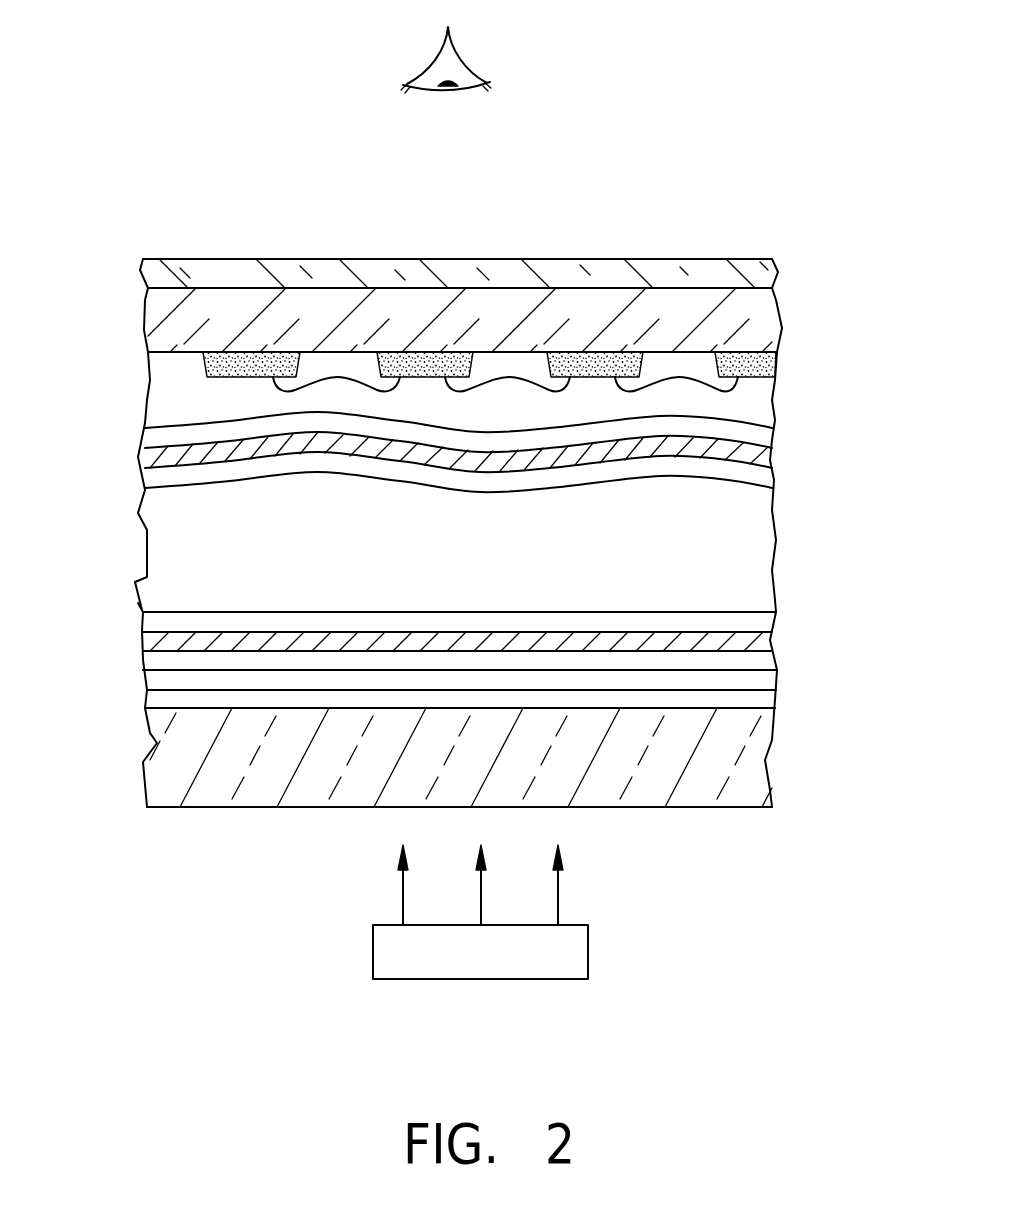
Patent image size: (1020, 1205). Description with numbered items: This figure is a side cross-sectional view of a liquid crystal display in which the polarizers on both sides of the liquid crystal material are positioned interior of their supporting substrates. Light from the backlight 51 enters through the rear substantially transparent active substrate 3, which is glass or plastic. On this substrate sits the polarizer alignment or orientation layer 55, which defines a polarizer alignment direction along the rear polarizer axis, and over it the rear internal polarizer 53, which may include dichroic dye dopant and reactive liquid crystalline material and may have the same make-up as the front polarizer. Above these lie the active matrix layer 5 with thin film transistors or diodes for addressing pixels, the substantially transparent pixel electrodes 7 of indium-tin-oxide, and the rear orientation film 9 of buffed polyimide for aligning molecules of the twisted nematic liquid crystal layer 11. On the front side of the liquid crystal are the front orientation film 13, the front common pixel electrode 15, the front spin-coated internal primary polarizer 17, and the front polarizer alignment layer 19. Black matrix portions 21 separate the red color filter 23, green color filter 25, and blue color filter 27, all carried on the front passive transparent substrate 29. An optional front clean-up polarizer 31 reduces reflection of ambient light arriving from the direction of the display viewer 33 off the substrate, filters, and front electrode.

The rear active substrate 3 is at (715, 763).
The active matrix layer 5 is at (720, 698).
The pixel electrodes 7 is at (750, 643).
The rear orientation film 9 is at (723, 622).
The liquid crystal layer 11 is at (728, 513).
The front orientation film 13 is at (725, 470).
The front pixel electrode 15 is at (750, 455).
The front internal primary polarizer 17 is at (748, 432).
The front polarizer alignment layer 19 is at (740, 405).
The black matrix portions 21 is at (231, 362).
The red color filter 23 is at (315, 362).
The green color filter 25 is at (488, 362).
The blue color filter 27 is at (678, 367).
The front passive substrate 29 is at (750, 325).
The front clean-up polarizer 31 is at (723, 260).
The display viewer 33 is at (468, 65).
The backlight 51 is at (588, 938).
The rear internal polarizer 53 is at (183, 662).
The rear polarizer alignment layer 55 is at (203, 678).